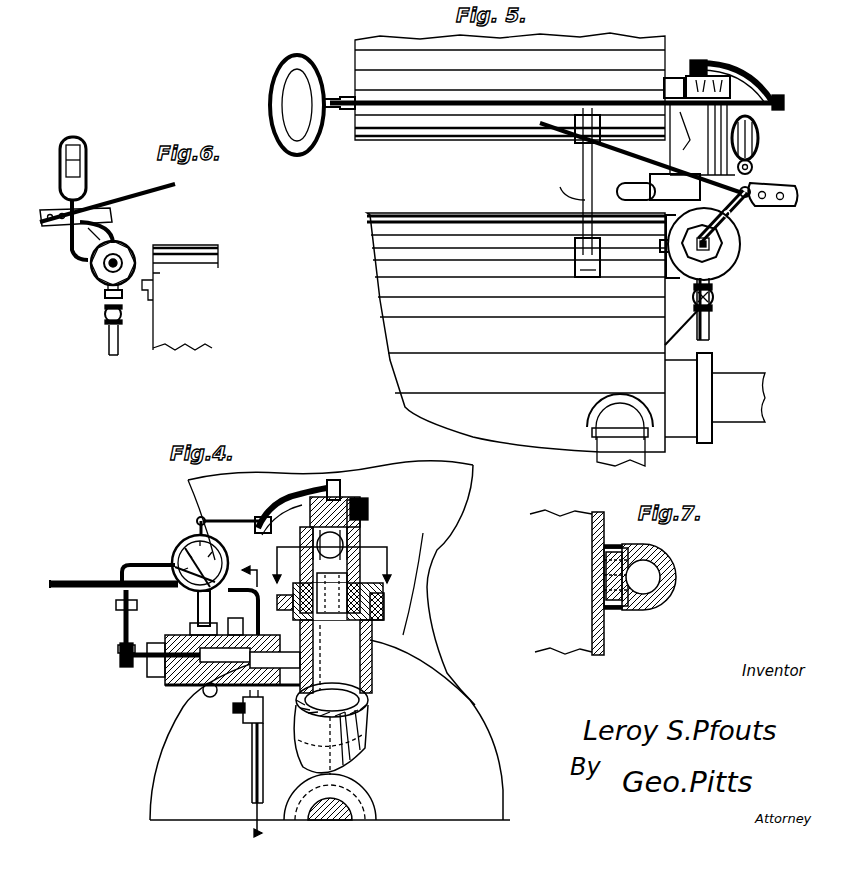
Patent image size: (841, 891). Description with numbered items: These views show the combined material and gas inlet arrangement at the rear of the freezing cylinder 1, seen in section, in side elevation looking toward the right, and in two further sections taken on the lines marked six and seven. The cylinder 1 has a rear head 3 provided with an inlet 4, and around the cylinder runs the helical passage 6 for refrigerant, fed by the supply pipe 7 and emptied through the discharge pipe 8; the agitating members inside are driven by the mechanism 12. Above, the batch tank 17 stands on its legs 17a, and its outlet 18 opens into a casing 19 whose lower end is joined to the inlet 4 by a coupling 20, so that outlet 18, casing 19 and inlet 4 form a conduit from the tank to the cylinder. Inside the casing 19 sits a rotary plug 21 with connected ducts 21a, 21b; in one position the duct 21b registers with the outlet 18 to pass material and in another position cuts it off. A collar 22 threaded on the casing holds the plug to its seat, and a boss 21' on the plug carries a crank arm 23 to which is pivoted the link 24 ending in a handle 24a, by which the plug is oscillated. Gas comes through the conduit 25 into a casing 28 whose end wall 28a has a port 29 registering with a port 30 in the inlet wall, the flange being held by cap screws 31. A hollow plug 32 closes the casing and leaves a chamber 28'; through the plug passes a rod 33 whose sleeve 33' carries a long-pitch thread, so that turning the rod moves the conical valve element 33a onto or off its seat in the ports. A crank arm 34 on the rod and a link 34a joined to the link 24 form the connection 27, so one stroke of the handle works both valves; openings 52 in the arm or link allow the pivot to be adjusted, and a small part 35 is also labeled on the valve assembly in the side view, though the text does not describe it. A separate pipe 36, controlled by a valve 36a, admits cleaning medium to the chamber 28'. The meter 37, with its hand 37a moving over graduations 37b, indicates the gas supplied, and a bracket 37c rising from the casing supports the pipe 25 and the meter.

In FIG. 5, the freezing cylinder 1 is at (433, 213).
In FIG. 6, the freezing cylinder 1 is at (210, 248).
In FIG. 4, the rear head 3 is at (158, 766).
In FIG. 5, the inlet 4 is at (660, 298).
In FIG. 4, the inlet 4 is at (375, 684).
In FIG. 4, the helical passage 6 is at (245, 694).
In FIG. 4, the supply pipe 7 is at (330, 575).
In FIG. 5, the discharge pipe 8 is at (648, 460).
In FIG. 5, the driving mechanism 12 is at (766, 386).
In FIG. 5, the batch tank 17 is at (645, 38).
In FIG. 4, the batch tank 17 is at (420, 484).
In FIG. 7, the batch tank 17 is at (606, 514).
In FIG. 5, the legs 17a is at (555, 191).
In FIG. 7, the outlet 18 is at (600, 598).
In FIG. 5, the casing 19 is at (752, 110).
In FIG. 4, the casing 19 is at (346, 540).
In FIG. 7, the casing 19 is at (662, 573).
In FIG. 5, the coupling 20 is at (632, 200).
In FIG. 4, the coupling 20 is at (386, 608).
In FIG. 4, the rotary plug 21 is at (338, 547).
In FIG. 7, the rotary plug 21 is at (654, 570).
In FIG. 5, the boss 21' is at (708, 63).
In FIG. 4, the boss 21' is at (346, 469).
In FIG. 4, the duct 21a is at (352, 548).
In FIG. 7, the duct 21a is at (643, 610).
In FIG. 4, the duct 21b is at (332, 593).
In FIG. 7, the duct 21b is at (668, 588).
In FIG. 5, the collar 22 is at (674, 78).
In FIG. 4, the collar 22 is at (368, 508).
In FIG. 5, the crank arm 23 is at (742, 68).
In FIG. 4, the crank arm 23 is at (292, 494).
In FIG. 5, the link 24 is at (476, 100).
In FIG. 4, the link 24 is at (246, 520).
In FIG. 5, the handle 24a is at (298, 58).
In FIG. 4, the conduit for gas 25 is at (64, 582).
In FIG. 5, the connection 27 is at (595, 192).
In FIG. 5, the casing 28 is at (732, 246).
In FIG. 6, the casing 28 is at (132, 254).
In FIG. 4, the casing 28 is at (221, 704).
In FIG. 6, the chamber 28' is at (78, 277).
In FIG. 4, the chamber 28' is at (227, 696).
In FIG. 4, the end wall 28a is at (313, 640).
In FIG. 4, the port 29 is at (313, 678).
In FIG. 4, the port 30 is at (313, 658).
In FIG. 4, the cap screws 31 is at (331, 740).
In FIG. 4, the hollow plug 32 is at (200, 688).
In FIG. 5, the rod 33 is at (730, 249).
In FIG. 6, the rod 33 is at (94, 299).
In FIG. 4, the rod 33 is at (185, 670).
In FIG. 4, the sleeve 33' is at (208, 613).
In FIG. 4, the valve element 33a is at (241, 626).
In FIG. 5, the crank arm 34 is at (745, 225).
In FIG. 6, the crank arm 34 is at (68, 252).
In FIG. 4, the crank arm 34 is at (118, 645).
In FIG. 5, the link 34a is at (565, 140).
In FIG. 6, the link 34a is at (107, 195).
In FIG. 4, the link 34a is at (124, 563).
In FIG. 5, the knob 35 is at (754, 166).
In FIG. 4, the knob 35 is at (149, 605).
In FIG. 5, the pipe 36 is at (711, 320).
In FIG. 6, the pipe 36 is at (107, 343).
In FIG. 4, the pipe 36 is at (252, 796).
In FIG. 5, the valve 36a is at (716, 296).
In FIG. 6, the valve 36a is at (104, 315).
In FIG. 4, the valve 36a is at (250, 726).
In FIG. 5, the measuring means 37 is at (762, 142).
In FIG. 6, the measuring means 37 is at (86, 165).
In FIG. 4, the measuring means 37 is at (192, 540).
In FIG. 4, the hand 37a is at (190, 560).
In FIG. 4, the graduations 37b is at (200, 537).
In FIG. 6, the bracket 37c is at (118, 222).
In FIG. 4, the bracket 37c is at (197, 607).
In FIG. 5, the openings 52 is at (762, 208).
In FIG. 6, the openings 52 is at (55, 227).